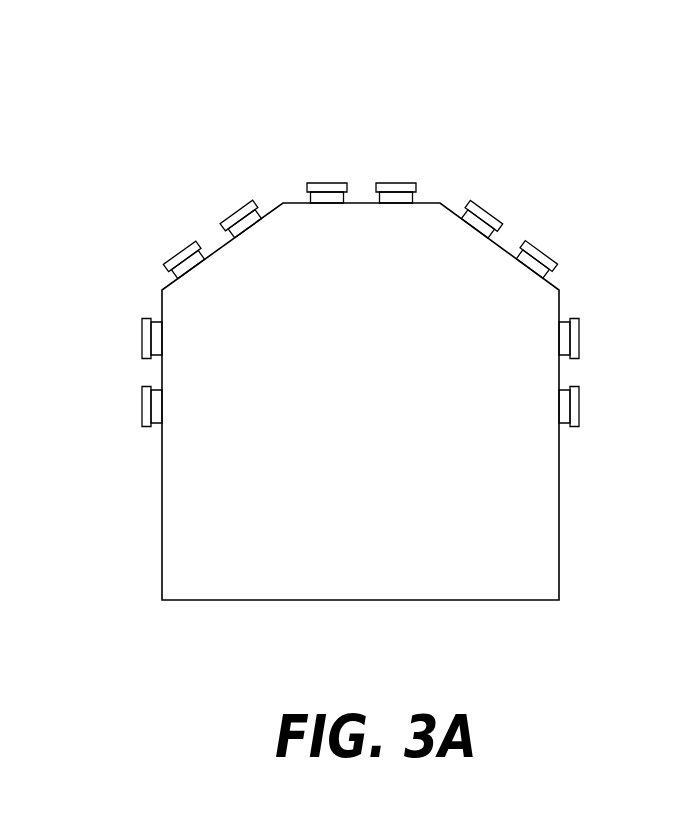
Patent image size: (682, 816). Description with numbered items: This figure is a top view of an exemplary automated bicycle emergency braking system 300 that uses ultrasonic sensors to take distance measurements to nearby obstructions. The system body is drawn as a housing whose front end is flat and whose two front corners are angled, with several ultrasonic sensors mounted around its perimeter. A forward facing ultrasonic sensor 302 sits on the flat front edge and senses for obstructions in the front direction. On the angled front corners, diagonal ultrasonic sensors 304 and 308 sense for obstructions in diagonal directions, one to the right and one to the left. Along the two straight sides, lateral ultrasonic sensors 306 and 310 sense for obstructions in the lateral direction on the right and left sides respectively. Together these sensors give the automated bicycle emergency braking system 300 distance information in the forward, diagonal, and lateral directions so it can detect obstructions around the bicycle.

The automated bicycle emergency braking system 300 is at (209, 94).
The forward facing ultrasonic sensor 302 is at (402, 181).
The diagonal ultrasonic sensor 304 is at (533, 248).
The lateral ultrasonic sensor 306 is at (580, 405).
The diagonal ultrasonic sensor 308 is at (180, 251).
The lateral ultrasonic sensor 310 is at (142, 338).